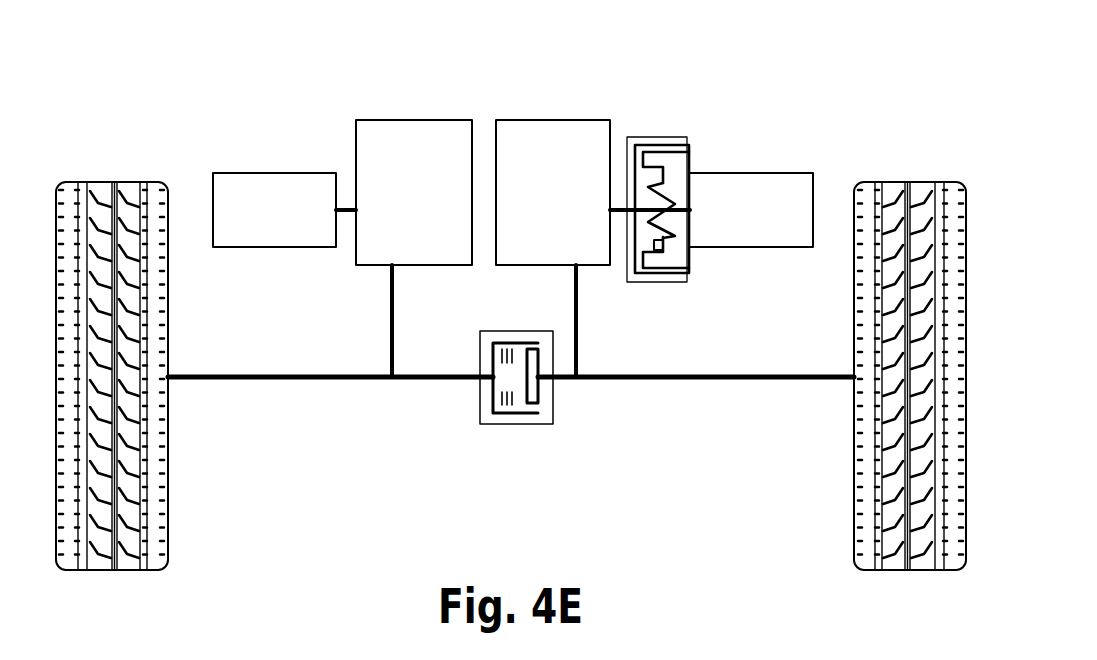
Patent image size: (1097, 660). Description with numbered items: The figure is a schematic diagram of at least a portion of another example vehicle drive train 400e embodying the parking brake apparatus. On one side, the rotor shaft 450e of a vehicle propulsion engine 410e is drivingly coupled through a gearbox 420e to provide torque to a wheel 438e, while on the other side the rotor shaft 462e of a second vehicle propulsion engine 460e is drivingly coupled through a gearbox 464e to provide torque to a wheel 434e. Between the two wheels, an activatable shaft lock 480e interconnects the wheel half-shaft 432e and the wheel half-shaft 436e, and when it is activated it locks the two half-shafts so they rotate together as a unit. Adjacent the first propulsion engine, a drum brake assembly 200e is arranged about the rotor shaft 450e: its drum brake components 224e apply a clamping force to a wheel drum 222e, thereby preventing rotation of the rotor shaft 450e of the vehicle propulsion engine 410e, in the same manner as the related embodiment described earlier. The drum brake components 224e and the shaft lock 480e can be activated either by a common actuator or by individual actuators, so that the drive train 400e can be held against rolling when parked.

The vehicle drive train 400e is at (846, 55).
The drum brake assembly 200e is at (699, 204).
The wheel drum 222e is at (642, 280).
The drum brake components 224e is at (660, 242).
The vehicle propulsion engine 410e is at (788, 173).
The gearbox 420e is at (553, 120).
The wheel half-shaft 432e is at (302, 380).
The wheel 434e is at (168, 507).
The wheel half-shaft 436e is at (713, 380).
The wheel 438e is at (855, 490).
The rotor shaft 450e is at (617, 204).
The vehicle propulsion engine 460e is at (275, 173).
The rotor shaft 462e is at (348, 206).
The gearbox 464e is at (417, 120).
The activatable shaft lock 480e is at (513, 425).